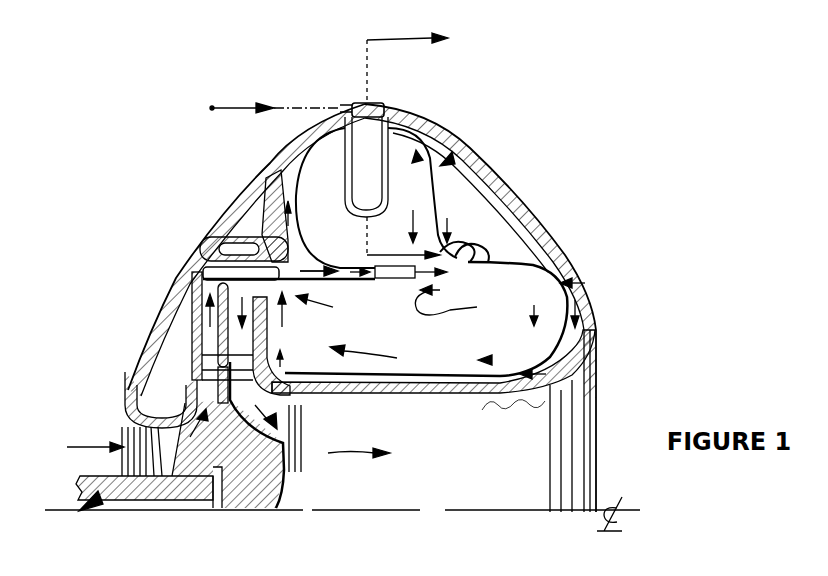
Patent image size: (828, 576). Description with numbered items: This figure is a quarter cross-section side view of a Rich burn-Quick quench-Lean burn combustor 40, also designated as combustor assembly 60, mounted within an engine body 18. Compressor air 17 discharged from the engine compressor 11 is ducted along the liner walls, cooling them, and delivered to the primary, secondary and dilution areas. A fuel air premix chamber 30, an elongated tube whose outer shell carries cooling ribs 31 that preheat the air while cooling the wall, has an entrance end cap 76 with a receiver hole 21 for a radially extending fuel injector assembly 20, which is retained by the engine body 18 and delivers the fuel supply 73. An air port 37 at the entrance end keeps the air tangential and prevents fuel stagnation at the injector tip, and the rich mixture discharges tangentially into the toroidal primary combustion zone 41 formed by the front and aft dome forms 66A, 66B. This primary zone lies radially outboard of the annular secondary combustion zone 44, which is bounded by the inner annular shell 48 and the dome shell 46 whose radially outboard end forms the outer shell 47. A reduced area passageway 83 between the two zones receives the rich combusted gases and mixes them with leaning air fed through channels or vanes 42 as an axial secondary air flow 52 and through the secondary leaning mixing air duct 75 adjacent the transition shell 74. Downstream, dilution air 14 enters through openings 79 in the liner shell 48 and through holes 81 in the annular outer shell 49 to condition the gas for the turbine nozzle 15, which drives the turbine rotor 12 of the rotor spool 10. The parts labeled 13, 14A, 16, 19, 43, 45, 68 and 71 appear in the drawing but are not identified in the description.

The rotor spool 10 is at (98, 496).
The engine compressor 11 is at (125, 497).
The turbine rotor 12 is at (278, 450).
The inlet block 13 is at (117, 457).
The dilution air 14 is at (182, 277).
The casing flange plate 14A is at (205, 291).
The turbine nozzle 15 is at (210, 348).
The inner wall 16 is at (217, 303).
The compressor air 17 is at (205, 240).
The engine body 18 is at (258, 176).
The injector mount 19 is at (340, 110).
The fuel injector assembly 20 is at (393, 100).
The injector receiver hole 21 is at (556, 568).
The fuel air premix chamber 30 is at (372, 176).
The cooling ribs 31 is at (678, 575).
The air port 37 is at (605, 575).
The RQL combustor 40 is at (400, 200).
The primary combustion zone 41 is at (375, 225).
The channels/vanes 42 is at (458, 190).
The dilution air flow 43 is at (500, 265).
The secondary combustion zone 44 is at (384, 265).
The recirculation flow 45 is at (445, 297).
The dome shell 46 is at (478, 360).
The outer shell 47 is at (518, 264).
The inner annular shell 48 is at (583, 262).
The annular outer shell 49 is at (363, 283).
The secondary air flow 52 is at (463, 250).
The combustor 60 is at (408, 358).
The front dome form 66A is at (297, 148).
The aft dome form 66B is at (392, 142).
The cavity wall 68 is at (450, 220).
The liner wall 71 is at (512, 440).
The fuel supply 73 is at (217, 104).
The transition shell 74 is at (466, 230).
The secondary leaning mixing air duct 75 is at (370, 283).
The entrance end cap 76 is at (520, 575).
The liner openings 79 is at (197, 427).
The holes 81 is at (282, 232).
The reduced area passageway 83 is at (482, 260).